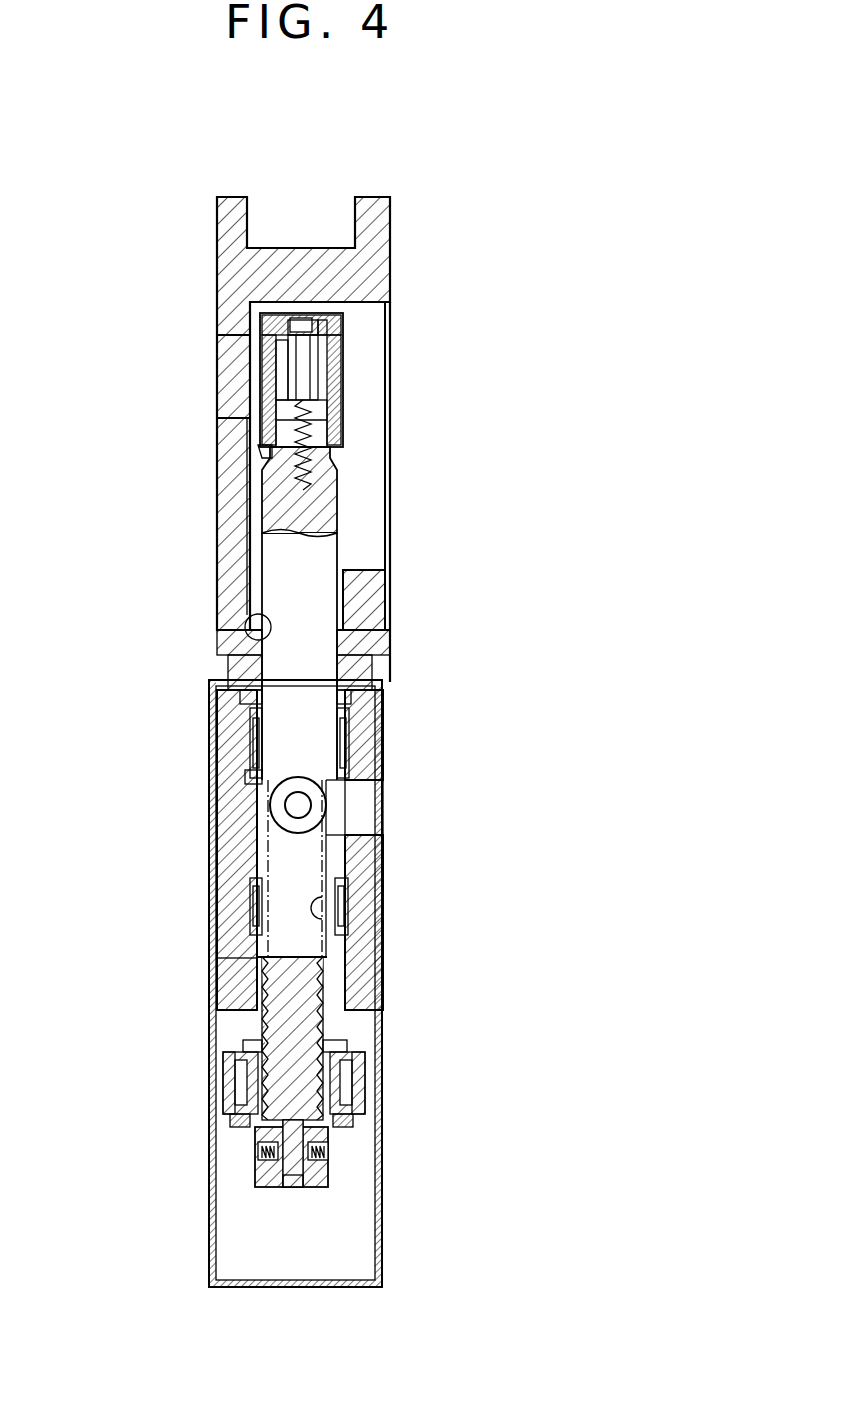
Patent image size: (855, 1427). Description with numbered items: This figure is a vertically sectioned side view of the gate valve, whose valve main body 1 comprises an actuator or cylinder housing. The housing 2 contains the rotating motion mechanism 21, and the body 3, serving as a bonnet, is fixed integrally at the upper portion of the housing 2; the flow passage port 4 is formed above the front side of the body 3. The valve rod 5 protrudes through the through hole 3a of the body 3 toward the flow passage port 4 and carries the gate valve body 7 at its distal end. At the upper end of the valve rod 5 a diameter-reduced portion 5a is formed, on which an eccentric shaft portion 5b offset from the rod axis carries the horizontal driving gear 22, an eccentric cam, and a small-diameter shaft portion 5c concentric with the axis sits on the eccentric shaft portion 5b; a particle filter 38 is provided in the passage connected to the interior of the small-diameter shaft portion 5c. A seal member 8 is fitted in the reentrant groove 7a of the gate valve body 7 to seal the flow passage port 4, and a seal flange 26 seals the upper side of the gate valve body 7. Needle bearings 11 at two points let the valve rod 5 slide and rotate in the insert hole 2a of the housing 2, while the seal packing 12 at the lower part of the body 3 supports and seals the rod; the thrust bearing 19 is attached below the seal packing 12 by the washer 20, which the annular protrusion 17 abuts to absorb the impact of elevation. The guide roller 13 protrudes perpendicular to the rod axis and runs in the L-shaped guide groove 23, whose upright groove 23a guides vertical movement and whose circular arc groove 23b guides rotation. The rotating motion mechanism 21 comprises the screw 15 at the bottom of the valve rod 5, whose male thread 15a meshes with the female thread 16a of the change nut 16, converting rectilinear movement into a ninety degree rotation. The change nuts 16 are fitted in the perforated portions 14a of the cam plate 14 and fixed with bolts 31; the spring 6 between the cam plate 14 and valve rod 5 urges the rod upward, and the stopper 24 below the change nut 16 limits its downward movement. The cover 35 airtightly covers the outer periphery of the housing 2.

The valve main body 1 is at (165, 835).
The housing 2 is at (376, 882).
The insert hole 2a is at (243, 778).
The body 3 is at (378, 646).
The through hole 3a is at (250, 612).
The flow passage port 4 is at (232, 408).
The valve rod 5 is at (322, 729).
The diameter-reduced portion 5a is at (355, 434).
The eccentric shaft portion 5b is at (336, 386).
The small-diameter shaft portion 5c is at (336, 352).
The spring 6 is at (222, 965).
The gate valve body 7 is at (264, 390).
The reentrant groove 7a is at (270, 330).
The seal member 8 is at (262, 454).
The needle bearing 11 is at (250, 915).
The seal packing 12 is at (376, 673).
The guide roller 13 is at (270, 806).
The cam plate 14 is at (362, 1118).
The perforated portion 14a is at (230, 1072).
The screw 15 is at (330, 1042).
The male thread 15a is at (262, 1046).
The change nut 16 is at (320, 1162).
The female thread 16a is at (262, 1150).
The annular protrusion 17 is at (352, 692).
The thrust bearing 19 is at (230, 682).
The washer 20 is at (218, 713).
The rotating motion mechanism 21 is at (350, 1075).
The horizontal driving gear 22 is at (262, 380).
The L-shaped guide groove 23 is at (282, 858).
The upright groove 23a is at (332, 912).
The circular arc groove 23b is at (365, 836).
The stopper 24 is at (305, 1190).
The seal flange 26 is at (322, 320).
The bolt 31 is at (240, 1127).
The cover 35 is at (383, 1185).
The particle filter 38 is at (306, 482).